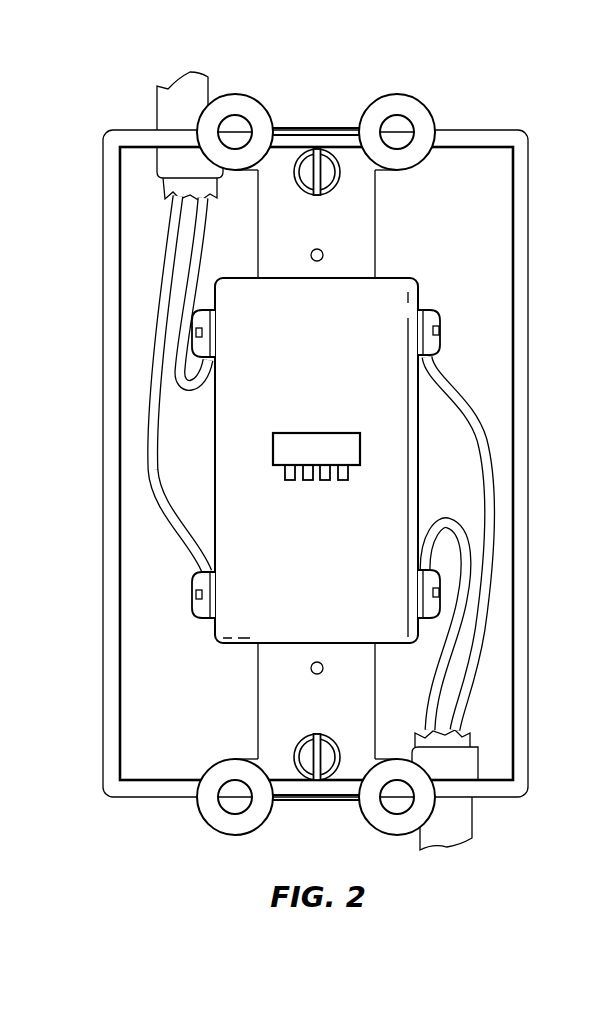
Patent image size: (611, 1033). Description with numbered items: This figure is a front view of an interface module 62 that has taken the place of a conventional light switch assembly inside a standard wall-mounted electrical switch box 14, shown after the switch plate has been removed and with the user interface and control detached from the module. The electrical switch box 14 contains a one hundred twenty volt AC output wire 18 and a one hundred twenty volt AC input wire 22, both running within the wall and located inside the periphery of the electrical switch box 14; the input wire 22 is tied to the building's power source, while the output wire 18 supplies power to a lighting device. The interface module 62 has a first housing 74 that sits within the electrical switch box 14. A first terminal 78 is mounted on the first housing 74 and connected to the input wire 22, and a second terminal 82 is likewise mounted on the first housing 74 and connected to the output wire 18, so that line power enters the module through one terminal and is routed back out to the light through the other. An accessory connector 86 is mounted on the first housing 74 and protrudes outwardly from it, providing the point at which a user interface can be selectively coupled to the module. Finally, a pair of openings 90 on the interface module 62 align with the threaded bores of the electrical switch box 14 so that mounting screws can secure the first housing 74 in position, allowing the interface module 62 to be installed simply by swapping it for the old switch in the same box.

The electrical switch box 14 is at (529, 226).
The 120 V AC output wire 18 is at (157, 108).
The 120 V AC input wire 22 is at (472, 815).
The interface module 62 is at (188, 610).
The first housing 74 is at (212, 467).
The first terminal 78 is at (437, 316).
The second terminal 82 is at (193, 314).
The accessory connector 86 is at (360, 446).
The pair of openings 90 is at (323, 152).